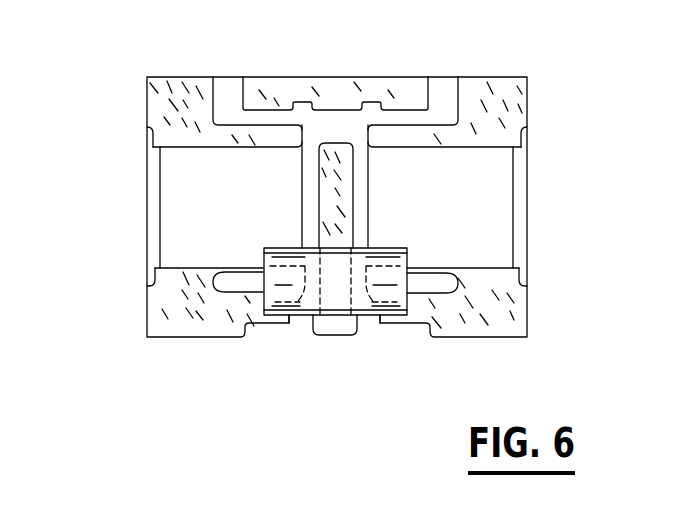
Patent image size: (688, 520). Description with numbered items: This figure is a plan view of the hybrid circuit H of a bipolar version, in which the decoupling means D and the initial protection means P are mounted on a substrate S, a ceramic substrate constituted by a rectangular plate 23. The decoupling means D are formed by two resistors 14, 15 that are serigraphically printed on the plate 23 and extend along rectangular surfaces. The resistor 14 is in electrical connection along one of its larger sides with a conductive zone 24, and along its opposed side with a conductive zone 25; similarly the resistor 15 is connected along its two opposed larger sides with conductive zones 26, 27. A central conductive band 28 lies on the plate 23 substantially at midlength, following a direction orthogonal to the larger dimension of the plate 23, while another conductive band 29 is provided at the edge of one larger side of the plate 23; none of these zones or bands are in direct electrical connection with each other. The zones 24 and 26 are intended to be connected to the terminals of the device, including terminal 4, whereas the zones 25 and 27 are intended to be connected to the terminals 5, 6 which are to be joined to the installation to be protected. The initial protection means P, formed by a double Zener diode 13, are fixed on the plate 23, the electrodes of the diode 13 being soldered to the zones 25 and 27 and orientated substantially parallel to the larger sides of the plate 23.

The plate 23 is at (536, 290).
The conductive zone 24 is at (201, 90).
The conductive zone 26 is at (503, 100).
The conductive band 29 is at (330, 96).
The central conductive band 28 is at (343, 170).
The conductive zone 25 is at (165, 304).
The conductive zone 27 is at (505, 315).
The resistor 14 is at (187, 217).
The resistor 15 is at (490, 205).
The double Zener diode 13 is at (363, 326).
The initial protection means P is at (335, 300).
The substrate S is at (295, 349).
The decoupling means D is at (189, 179).
The hybrid circuit H is at (136, 189).
The terminal 4 is at (180, 100).
The terminal 5 is at (177, 308).
The terminal 6 is at (478, 316).